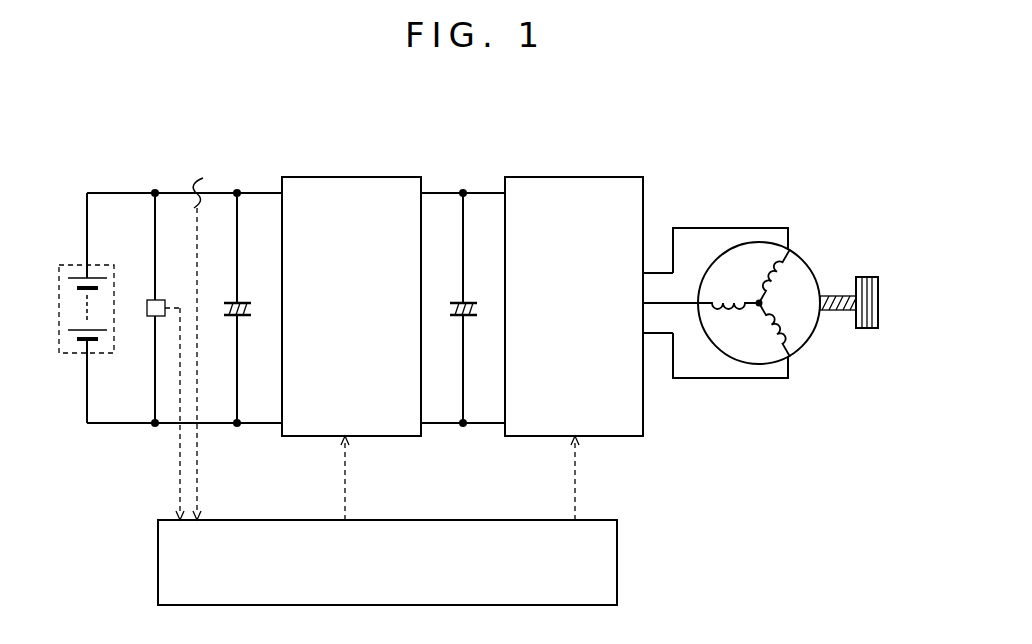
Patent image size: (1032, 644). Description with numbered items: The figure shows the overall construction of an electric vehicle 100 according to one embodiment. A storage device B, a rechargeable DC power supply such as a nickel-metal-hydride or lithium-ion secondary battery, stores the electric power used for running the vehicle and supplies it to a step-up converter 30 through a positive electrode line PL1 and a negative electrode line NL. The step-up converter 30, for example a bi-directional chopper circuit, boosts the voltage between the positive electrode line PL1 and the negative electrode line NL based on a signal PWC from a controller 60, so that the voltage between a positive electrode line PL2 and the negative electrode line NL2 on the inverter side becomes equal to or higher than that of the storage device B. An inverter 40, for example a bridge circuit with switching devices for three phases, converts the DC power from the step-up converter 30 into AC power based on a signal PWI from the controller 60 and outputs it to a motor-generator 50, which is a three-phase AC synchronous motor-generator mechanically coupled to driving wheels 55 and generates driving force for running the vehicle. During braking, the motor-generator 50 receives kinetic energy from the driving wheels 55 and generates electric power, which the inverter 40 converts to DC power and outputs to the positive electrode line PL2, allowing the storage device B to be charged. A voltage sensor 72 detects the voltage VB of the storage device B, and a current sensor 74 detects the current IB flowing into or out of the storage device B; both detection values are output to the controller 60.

The electric vehicle 100 is at (862, 134).
The electric storage device B is at (76, 265).
The voltage sensor 72 is at (147, 300).
The current sensor 74 is at (203, 178).
The positive electrode line PL1 is at (262, 190).
The positive electrode line PL2 is at (443, 190).
The negative electrode line NL is at (262, 424).
The negative electrode line NL2 is at (444, 424).
The step-up converter 30 is at (358, 177).
The inverter 40 is at (583, 177).
The motor-generator 50 is at (810, 263).
The driving wheels 55 is at (868, 277).
The controller 60 is at (506, 520).
The voltage of the storage device VB is at (168, 414).
The current of the storage device IB is at (204, 364).
The signal for step-up converter PWC is at (361, 478).
The signal for inverter PWI is at (588, 478).